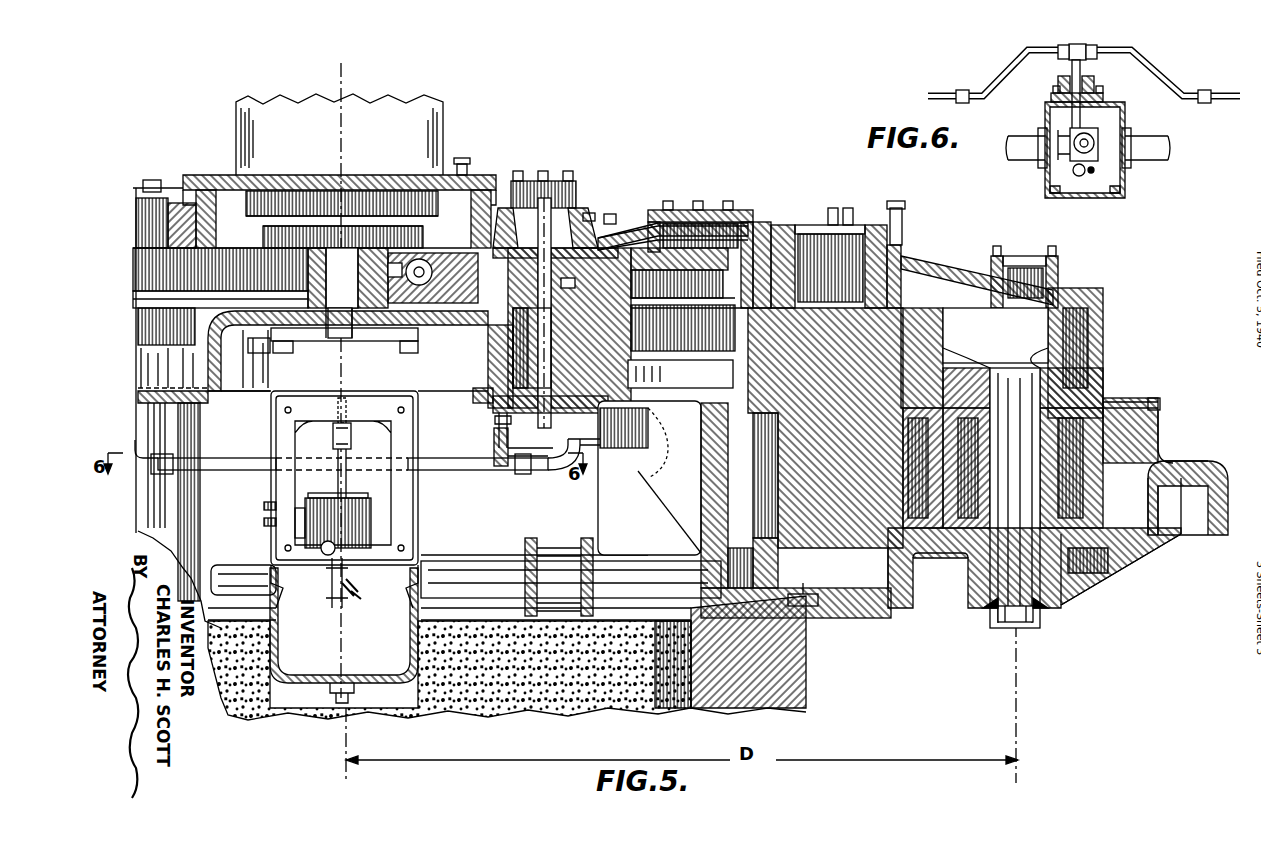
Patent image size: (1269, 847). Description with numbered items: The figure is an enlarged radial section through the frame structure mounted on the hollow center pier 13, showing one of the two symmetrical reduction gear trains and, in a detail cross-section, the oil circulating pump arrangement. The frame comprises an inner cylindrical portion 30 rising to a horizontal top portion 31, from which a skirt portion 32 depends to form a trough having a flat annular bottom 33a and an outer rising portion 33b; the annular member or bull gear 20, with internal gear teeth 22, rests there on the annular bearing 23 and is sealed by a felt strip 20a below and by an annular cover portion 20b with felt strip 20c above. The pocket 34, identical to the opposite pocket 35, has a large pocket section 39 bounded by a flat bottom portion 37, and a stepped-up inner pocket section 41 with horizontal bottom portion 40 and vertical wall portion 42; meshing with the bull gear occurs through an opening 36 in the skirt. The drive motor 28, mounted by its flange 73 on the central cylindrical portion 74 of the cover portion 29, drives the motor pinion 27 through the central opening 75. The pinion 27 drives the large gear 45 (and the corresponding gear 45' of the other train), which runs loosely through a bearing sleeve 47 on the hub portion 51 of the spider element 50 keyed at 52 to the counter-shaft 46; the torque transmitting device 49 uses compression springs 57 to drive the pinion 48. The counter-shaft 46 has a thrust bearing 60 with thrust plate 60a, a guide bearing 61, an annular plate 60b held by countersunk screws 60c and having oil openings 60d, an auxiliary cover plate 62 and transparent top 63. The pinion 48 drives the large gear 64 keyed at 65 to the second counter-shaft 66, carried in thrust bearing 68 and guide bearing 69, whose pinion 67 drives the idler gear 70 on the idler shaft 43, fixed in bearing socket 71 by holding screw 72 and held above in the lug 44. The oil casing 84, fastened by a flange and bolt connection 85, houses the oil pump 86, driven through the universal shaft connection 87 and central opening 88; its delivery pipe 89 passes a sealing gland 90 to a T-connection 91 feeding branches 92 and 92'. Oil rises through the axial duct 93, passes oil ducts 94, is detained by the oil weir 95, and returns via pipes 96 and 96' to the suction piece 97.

In FIG. 5, the center pier 13 is at (785, 666).
In FIG. 5, the annular member 20 is at (1168, 455).
In FIG. 5, the felt strip 20a is at (1188, 456).
In FIG. 5, the annular cover portion 20b is at (1153, 390).
In FIG. 5, the felt strip 20c is at (1152, 393).
In FIG. 5, the internal gear teeth 22 is at (1160, 412).
In FIG. 5, the annular bearing 23 is at (1173, 537).
In FIG. 5, the motor pinion 27 is at (306, 289).
In FIG. 5, the drive motor 28 is at (339, 134).
In FIG. 5, the cover portion 29 is at (627, 223).
In FIG. 5, the inner cylindrical portion 30 is at (694, 504).
In FIG. 5, the top portion 31 is at (461, 329).
In FIG. 5, the skirt portion 32 is at (1096, 345).
In FIG. 5, the flat annular bottom 33a is at (1127, 550).
In FIG. 5, the outer annular portion 33b is at (1200, 528).
In FIG. 5, the pocket 34 is at (690, 448).
In FIG. 5, the pocket 35 is at (313, 382).
In FIG. 5, the opening 36 is at (1110, 385).
In FIG. 5, the flat bottom portion 37 is at (930, 552).
In FIG. 5, the pocket section 39 is at (745, 515).
In FIG. 5, the horizontal bottom portion 40 is at (641, 424).
In FIG. 5, the inner pocket section 41 is at (462, 352).
In FIG. 5, the vertical wall portion 42 is at (449, 346).
In FIG. 5, the gear shaft 43 is at (995, 338).
In FIG. 5, the lug 44 is at (962, 382).
In FIG. 5, the large gear 45 is at (523, 241).
In FIG. 5, the large gear 45' is at (220, 280).
In FIG. 5, the counter-shaft 46 is at (482, 398).
In FIG. 5, the bearing sleeve 47 is at (419, 246).
In FIG. 5, the pinion 48 is at (464, 384).
In FIG. 5, the torque transmitting device 49 is at (420, 324).
In FIG. 5, the spider element 50 is at (633, 299).
In FIG. 5, the hub portion 51 is at (528, 313).
In FIG. 5, the key 52 is at (531, 325).
In FIG. 5, the compression springs 57 is at (404, 278).
In FIG. 5, the thrust bearing 60 is at (598, 433).
In FIG. 5, the annular thrust plate 60a is at (489, 420).
In FIG. 5, the annular plate 60b is at (648, 230).
In FIG. 5, the countersunk screws 60c is at (557, 286).
In FIG. 5, the oil openings 60d is at (617, 222).
In FIG. 5, the guide bearing 61 is at (588, 205).
In FIG. 5, the auxiliary cover plate 62 is at (583, 192).
In FIG. 5, the transparent top 63 is at (530, 172).
In FIG. 5, the large gear 64 is at (1095, 298).
In FIG. 5, the key 65 is at (910, 310).
In FIG. 5, the second counter-shaft 66 is at (825, 385).
In FIG. 5, the pinion 67 is at (751, 433).
In FIG. 5, the thrust bearing 68 is at (806, 598).
In FIG. 5, the guide bearing 69 is at (893, 238).
In FIG. 5, the idler gear 70 is at (1087, 548).
In FIG. 5, the bearing socket 71 is at (1053, 598).
In FIG. 5, the holding screw 72 is at (1003, 616).
In FIG. 5, the flange 73 is at (470, 166).
In FIG. 5, the central cylindrical portion 74 is at (463, 190).
In FIG. 5, the central opening 75 is at (230, 195).
In FIG. 5, the oil casing 84 is at (398, 633).
In FIG. 5, the flange and bolt connection 85 is at (278, 337).
In FIG. 5, the oil pump 86 is at (356, 519).
In FIG. 6, the oil pump 86 is at (1090, 130).
In FIG. 5, the universal shaft connection 87 is at (353, 425).
In FIG. 6, the universal shaft connection 87 is at (1092, 146).
In FIG. 5, the central opening 88 is at (293, 308).
In FIG. 6, the oil pressure and delivery pipe 89 is at (1090, 63).
In FIG. 6, the sealing gland 90 is at (1057, 81).
In FIG. 6, the T-connection 91 is at (1072, 42).
In FIG. 5, the oil pressure branch 92 is at (491, 469).
In FIG. 6, the oil pressure branch 92 is at (1156, 68).
In FIG. 5, the oil pressure branch 92' is at (271, 470).
In FIG. 6, the oil pressure branch 92' is at (1008, 68).
In FIG. 5, the axial duct 93 is at (548, 352).
In FIG. 5, the oil ducts 94 is at (603, 210).
In FIG. 5, the oil weir 95 is at (680, 373).
In FIG. 5, the return pipe 96 is at (571, 568).
In FIG. 6, the return pipe 96 is at (1155, 162).
In FIG. 5, the oil return pipe 96' is at (243, 548).
In FIG. 6, the oil return pipe 96' is at (1012, 162).
In FIG. 5, the suction piece 97 is at (362, 588).